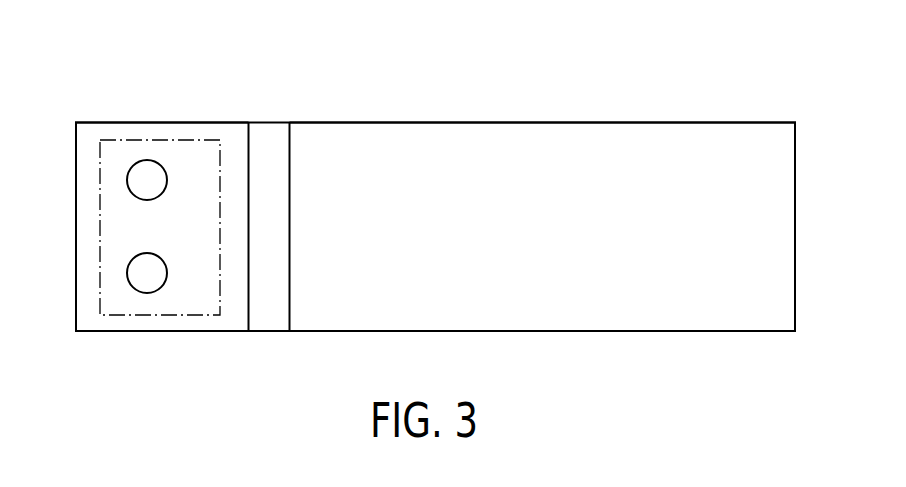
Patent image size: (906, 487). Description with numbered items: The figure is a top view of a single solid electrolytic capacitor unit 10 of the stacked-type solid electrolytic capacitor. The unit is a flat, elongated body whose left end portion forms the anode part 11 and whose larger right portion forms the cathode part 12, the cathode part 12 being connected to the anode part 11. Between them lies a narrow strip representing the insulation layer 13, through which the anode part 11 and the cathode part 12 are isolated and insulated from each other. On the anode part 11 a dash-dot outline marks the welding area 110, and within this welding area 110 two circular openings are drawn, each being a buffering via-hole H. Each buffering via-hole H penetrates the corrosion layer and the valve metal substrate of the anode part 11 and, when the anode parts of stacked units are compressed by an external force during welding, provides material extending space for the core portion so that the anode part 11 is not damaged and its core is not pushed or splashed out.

The solid electrolytic capacitor unit 10 is at (101, 27).
The anode part 11 is at (159, 115).
The cathode part 12 is at (720, 116).
The insulation layer 13 is at (266, 115).
The welding area 110 is at (140, 181).
The buffering via-hole H is at (146, 316).